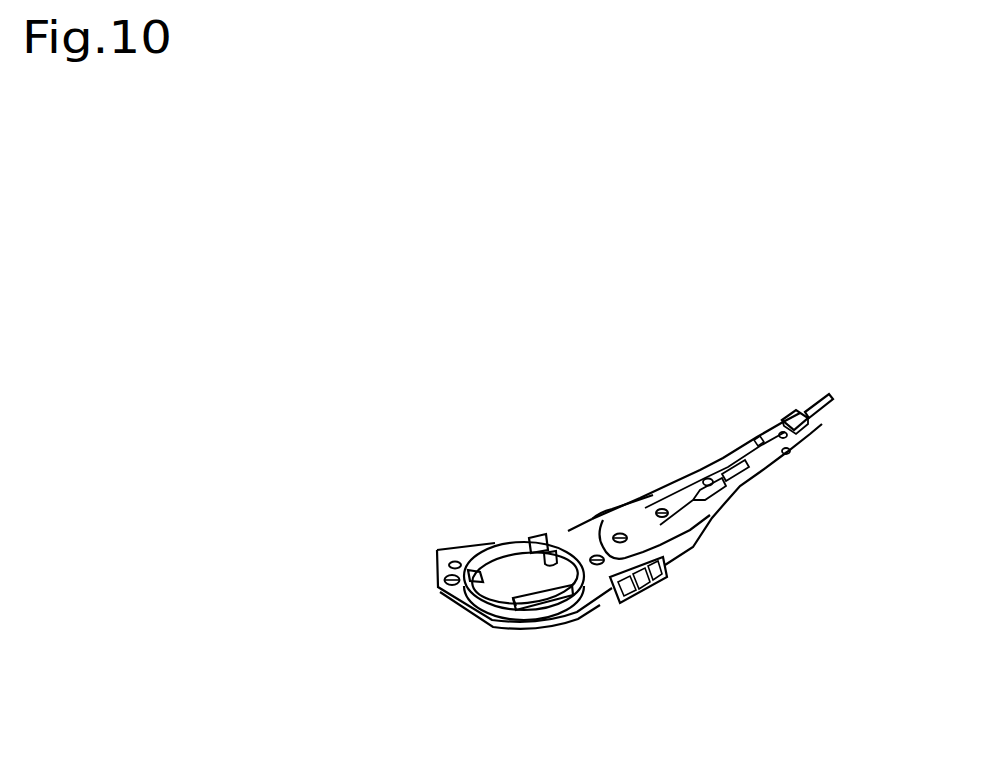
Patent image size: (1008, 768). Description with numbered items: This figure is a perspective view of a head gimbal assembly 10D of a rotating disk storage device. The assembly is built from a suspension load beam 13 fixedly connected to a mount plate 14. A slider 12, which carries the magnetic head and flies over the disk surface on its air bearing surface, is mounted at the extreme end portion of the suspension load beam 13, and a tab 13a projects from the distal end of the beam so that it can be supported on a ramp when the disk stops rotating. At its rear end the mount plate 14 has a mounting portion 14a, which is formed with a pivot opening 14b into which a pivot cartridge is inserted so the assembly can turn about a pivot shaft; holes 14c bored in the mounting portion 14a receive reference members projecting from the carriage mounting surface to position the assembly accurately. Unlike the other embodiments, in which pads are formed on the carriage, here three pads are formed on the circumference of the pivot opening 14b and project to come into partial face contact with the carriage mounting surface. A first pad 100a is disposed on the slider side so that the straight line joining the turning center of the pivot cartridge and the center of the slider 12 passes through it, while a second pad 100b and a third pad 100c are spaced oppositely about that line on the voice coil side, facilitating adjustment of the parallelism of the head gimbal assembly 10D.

The head gimbal assembly 10D is at (708, 522).
The slider 12 is at (787, 417).
The suspension load beam 13 is at (783, 447).
The tab 13a is at (822, 412).
The mount plate 14 is at (547, 617).
The mounting portion 14a is at (488, 547).
The pivot opening 14b is at (547, 557).
The holes 14c is at (457, 567).
The first pad 100a is at (548, 543).
The second pad 100b is at (467, 590).
The third pad 100c is at (537, 598).